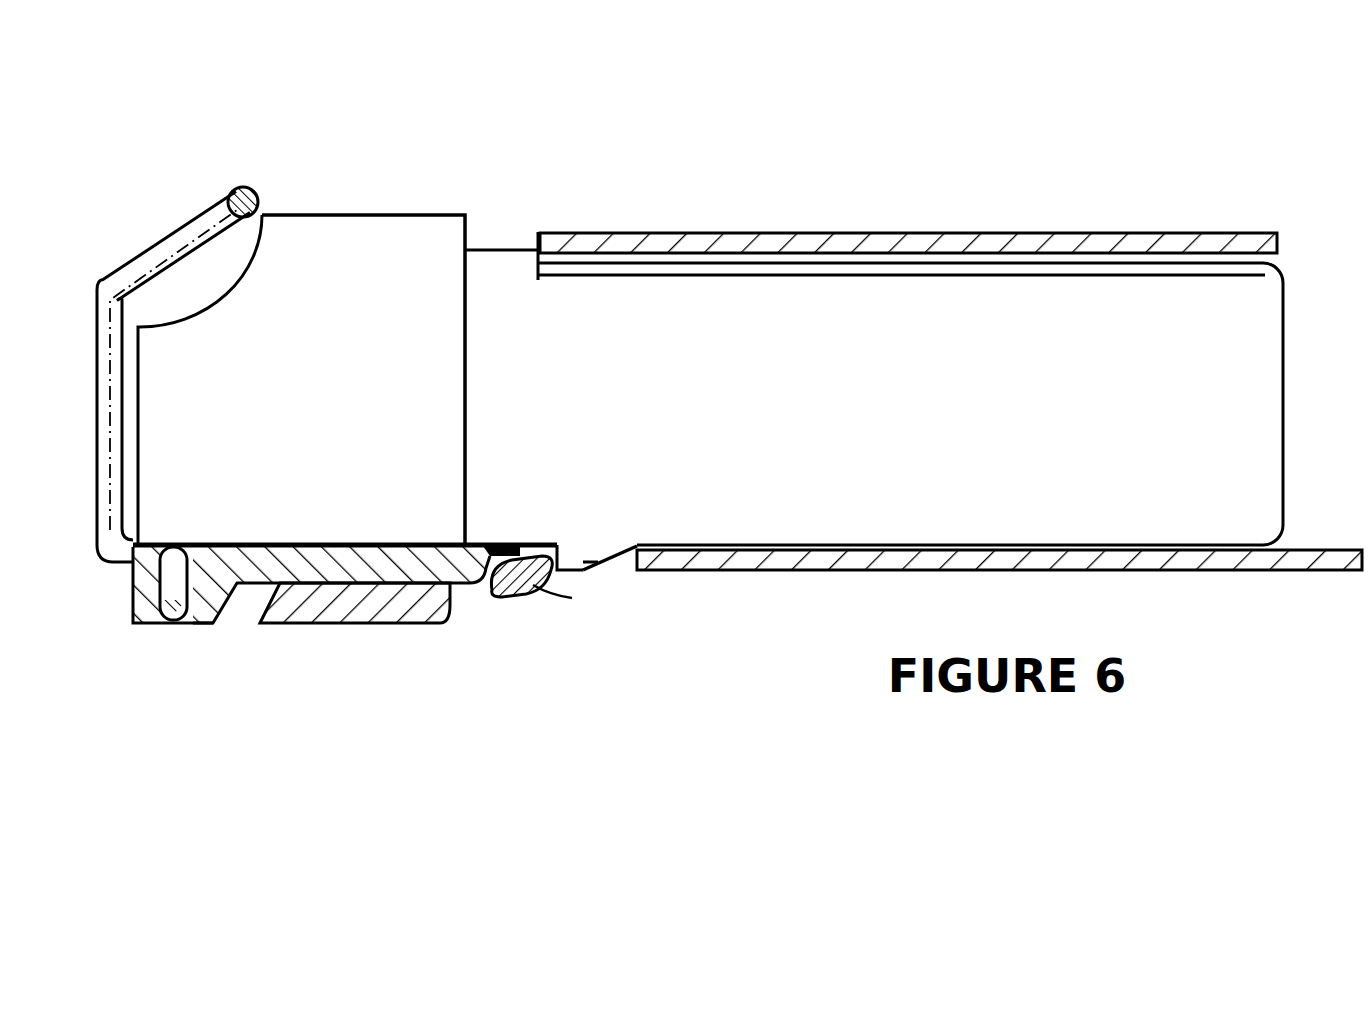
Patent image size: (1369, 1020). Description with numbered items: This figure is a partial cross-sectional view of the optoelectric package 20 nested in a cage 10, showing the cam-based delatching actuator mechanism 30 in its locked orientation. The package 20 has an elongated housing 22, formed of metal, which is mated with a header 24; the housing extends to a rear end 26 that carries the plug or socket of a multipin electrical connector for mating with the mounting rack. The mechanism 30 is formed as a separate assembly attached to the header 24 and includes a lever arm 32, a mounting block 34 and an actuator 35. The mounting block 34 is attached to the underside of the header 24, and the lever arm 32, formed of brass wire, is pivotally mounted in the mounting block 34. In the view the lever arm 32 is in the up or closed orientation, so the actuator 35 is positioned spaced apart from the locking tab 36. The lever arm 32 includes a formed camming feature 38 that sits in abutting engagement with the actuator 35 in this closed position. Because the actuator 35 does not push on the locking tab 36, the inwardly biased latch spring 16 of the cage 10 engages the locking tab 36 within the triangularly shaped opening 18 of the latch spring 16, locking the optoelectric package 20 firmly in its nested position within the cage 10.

The cage 10 is at (1117, 233).
The latch spring 16 is at (572, 600).
The triangular opening 18 is at (593, 578).
The optoelectric package 20 is at (913, 345).
The elongated housing 22 is at (933, 367).
The header 24 is at (378, 215).
The rear end 26 is at (1285, 313).
The cam-based delatching actuator mechanism 30 is at (305, 657).
The lever arm 32 is at (190, 224).
The mounting block 34 is at (300, 620).
The actuator 35 is at (480, 587).
The locking tab 36 is at (598, 562).
The camming feature 38 is at (173, 622).